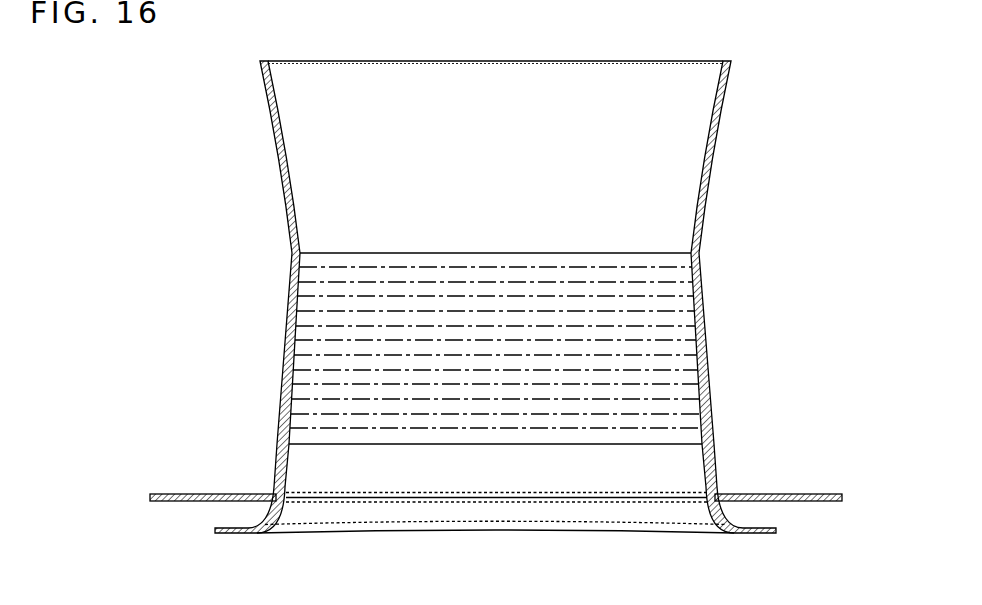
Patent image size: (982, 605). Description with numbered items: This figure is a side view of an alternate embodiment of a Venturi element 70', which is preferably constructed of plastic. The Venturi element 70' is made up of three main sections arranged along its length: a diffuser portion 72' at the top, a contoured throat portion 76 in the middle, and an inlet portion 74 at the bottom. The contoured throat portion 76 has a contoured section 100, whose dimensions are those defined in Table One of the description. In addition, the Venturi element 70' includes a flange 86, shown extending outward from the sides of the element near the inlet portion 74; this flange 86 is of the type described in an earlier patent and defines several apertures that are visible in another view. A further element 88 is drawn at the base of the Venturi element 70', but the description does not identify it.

The Venturi element 70' is at (546, 297).
The diffuser portion 72' is at (393, 156).
The contoured throat portion 76 is at (147, 253).
The inlet portion 74 is at (147, 445).
The contoured section 100 is at (252, 364).
The flange 86 is at (792, 493).
The bottom flange / base 88 is at (217, 532).